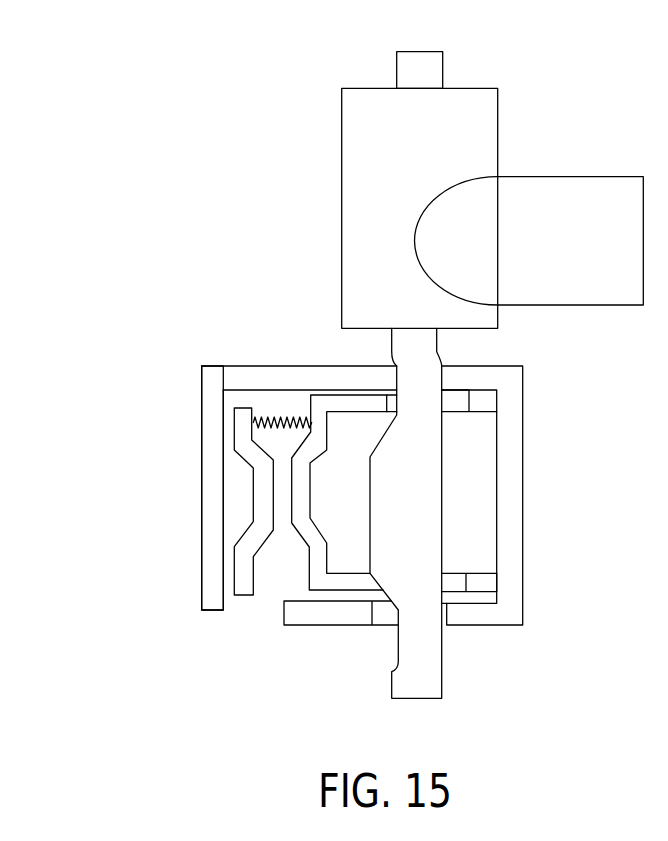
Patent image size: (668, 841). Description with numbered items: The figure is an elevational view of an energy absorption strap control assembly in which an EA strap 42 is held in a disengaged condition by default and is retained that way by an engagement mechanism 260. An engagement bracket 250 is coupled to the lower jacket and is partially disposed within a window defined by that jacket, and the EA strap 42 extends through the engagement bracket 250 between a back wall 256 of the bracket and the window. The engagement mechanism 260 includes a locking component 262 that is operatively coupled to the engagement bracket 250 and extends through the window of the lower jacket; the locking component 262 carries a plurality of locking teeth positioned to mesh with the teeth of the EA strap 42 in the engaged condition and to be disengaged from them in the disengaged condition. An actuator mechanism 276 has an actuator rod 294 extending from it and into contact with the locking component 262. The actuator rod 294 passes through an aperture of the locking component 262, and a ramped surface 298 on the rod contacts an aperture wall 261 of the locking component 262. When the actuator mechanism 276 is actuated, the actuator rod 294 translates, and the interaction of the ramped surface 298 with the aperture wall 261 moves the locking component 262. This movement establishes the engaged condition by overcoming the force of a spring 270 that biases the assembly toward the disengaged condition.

The actuator mechanism 276 is at (543, 134).
The actuator rod 294 is at (418, 488).
The engagement mechanism 260 is at (561, 472).
The back wall 256 is at (208, 498).
The engagement bracket 250 is at (497, 548).
The aperture wall 261 is at (388, 405).
The ramped surface 298 is at (380, 437).
The locking component 262 is at (318, 562).
The spring 270 is at (266, 416).
The EA strap 42 is at (243, 585).